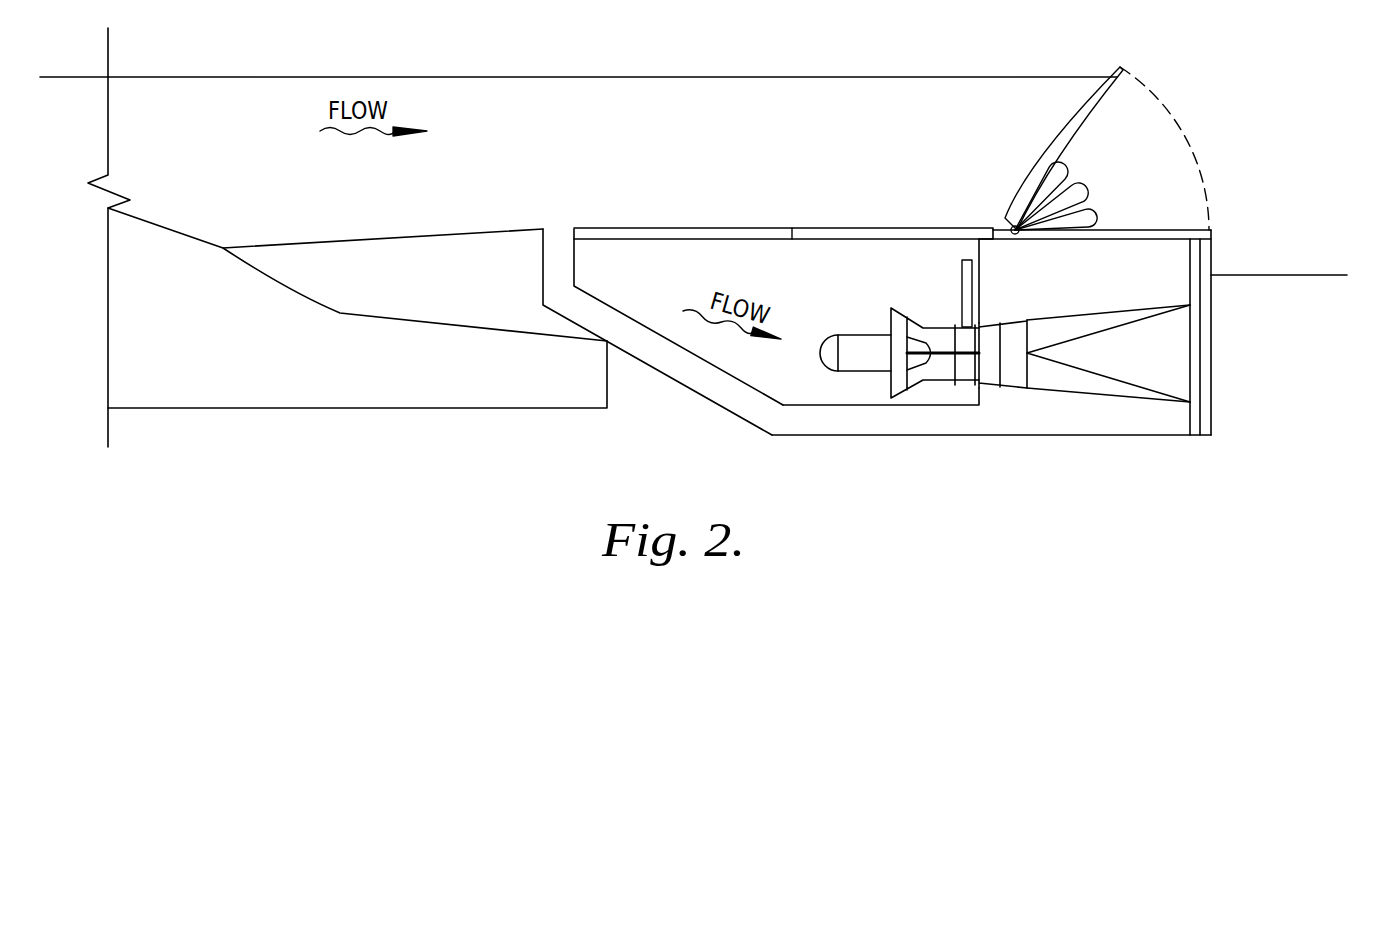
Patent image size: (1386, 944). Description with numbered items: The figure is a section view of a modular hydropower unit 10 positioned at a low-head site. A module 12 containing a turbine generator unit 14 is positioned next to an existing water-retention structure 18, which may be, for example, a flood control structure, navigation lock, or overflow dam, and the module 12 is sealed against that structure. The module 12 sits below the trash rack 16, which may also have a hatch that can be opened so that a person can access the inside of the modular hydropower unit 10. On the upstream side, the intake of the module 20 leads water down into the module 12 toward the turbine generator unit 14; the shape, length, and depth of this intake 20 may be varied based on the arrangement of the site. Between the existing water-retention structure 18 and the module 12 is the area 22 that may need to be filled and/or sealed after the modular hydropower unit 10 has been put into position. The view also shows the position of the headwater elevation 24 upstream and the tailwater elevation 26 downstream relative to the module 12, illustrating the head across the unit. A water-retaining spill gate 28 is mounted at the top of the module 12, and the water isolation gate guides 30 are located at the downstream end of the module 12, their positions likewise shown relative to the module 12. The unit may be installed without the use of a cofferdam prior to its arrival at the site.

The modular hydropower unit 10 is at (1238, 230).
The module 12 is at (970, 437).
The turbine generator unit 14 is at (830, 338).
The trash rack 16 is at (867, 228).
The existing water-retention structure 18 is at (215, 410).
The intake of the module 20 is at (700, 395).
The area to be filled and/or sealed 22 is at (505, 228).
The headwater elevation 24 is at (213, 77).
The tailwater elevation 26 is at (1295, 275).
The water-retaining spill gate 28 is at (1118, 72).
The water isolation gate guides 30 is at (1213, 405).